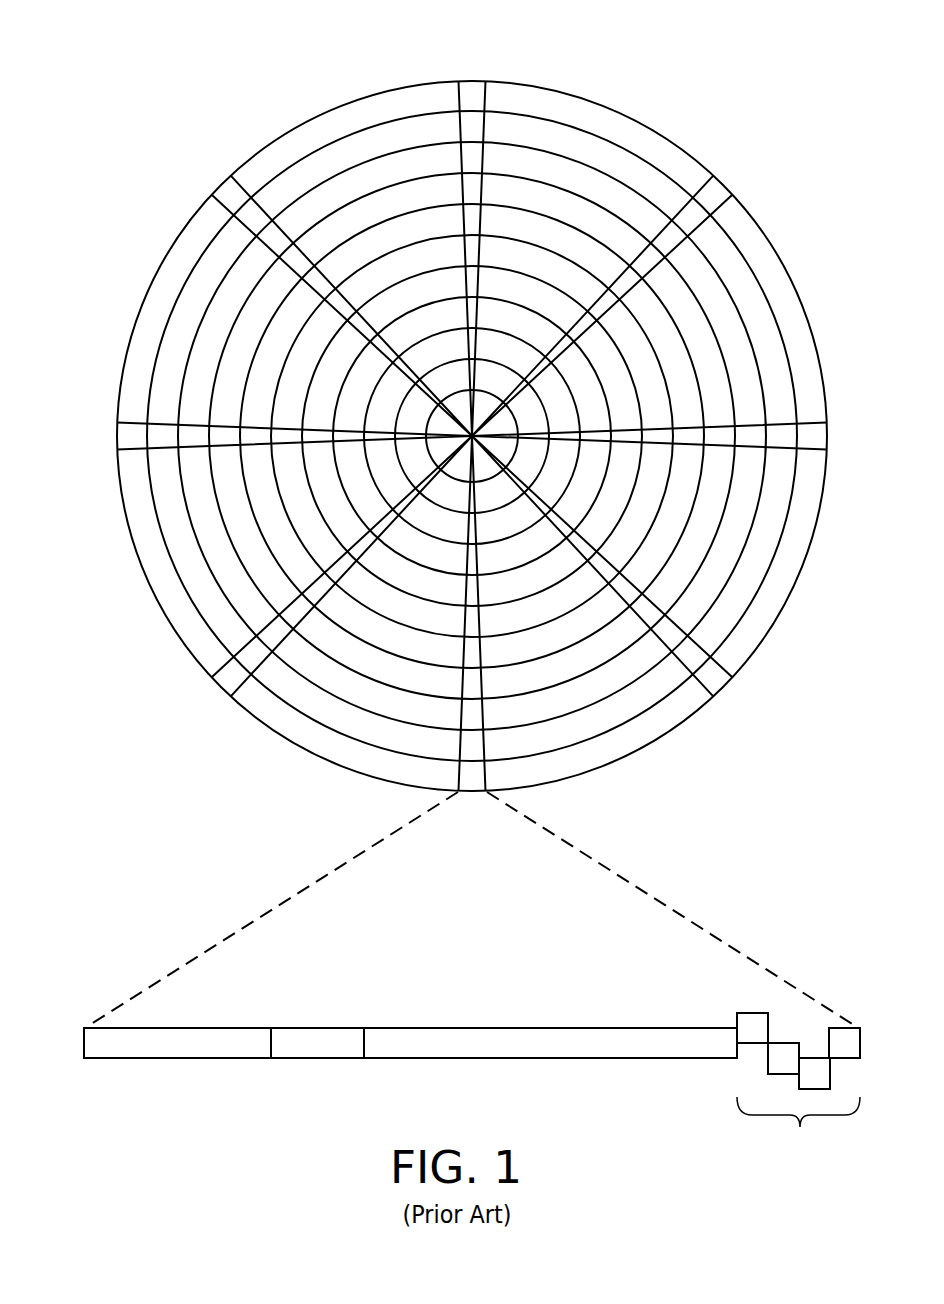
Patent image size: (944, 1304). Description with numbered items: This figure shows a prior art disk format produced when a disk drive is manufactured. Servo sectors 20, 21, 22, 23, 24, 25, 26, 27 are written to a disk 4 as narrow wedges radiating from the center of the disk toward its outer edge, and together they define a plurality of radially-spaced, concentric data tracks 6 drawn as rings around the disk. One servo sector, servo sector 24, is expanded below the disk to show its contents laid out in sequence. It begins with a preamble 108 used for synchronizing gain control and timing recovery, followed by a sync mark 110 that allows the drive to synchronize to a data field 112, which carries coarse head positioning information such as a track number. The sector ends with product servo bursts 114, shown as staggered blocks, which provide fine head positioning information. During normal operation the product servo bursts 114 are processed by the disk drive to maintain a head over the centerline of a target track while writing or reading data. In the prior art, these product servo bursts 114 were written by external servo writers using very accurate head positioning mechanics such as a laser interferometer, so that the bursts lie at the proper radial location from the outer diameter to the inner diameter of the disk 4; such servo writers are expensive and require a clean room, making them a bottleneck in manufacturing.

The disk 4 is at (210, 90).
The data tracks 6 is at (592, 152).
The servo sector 20 is at (473, 95).
The servo sector 21 is at (722, 192).
The servo sector 22 is at (820, 437).
The servo sector 23 is at (722, 683).
The servo sector 24 is at (316, 868).
The servo sector 25 is at (232, 687).
The servo sector 26 is at (122, 437).
The servo sector 27 is at (228, 193).
The preamble 108 is at (155, 1060).
The sync mark 110 is at (317, 1060).
The data field 112 is at (545, 1060).
The product servo bursts 114 is at (725, 993).